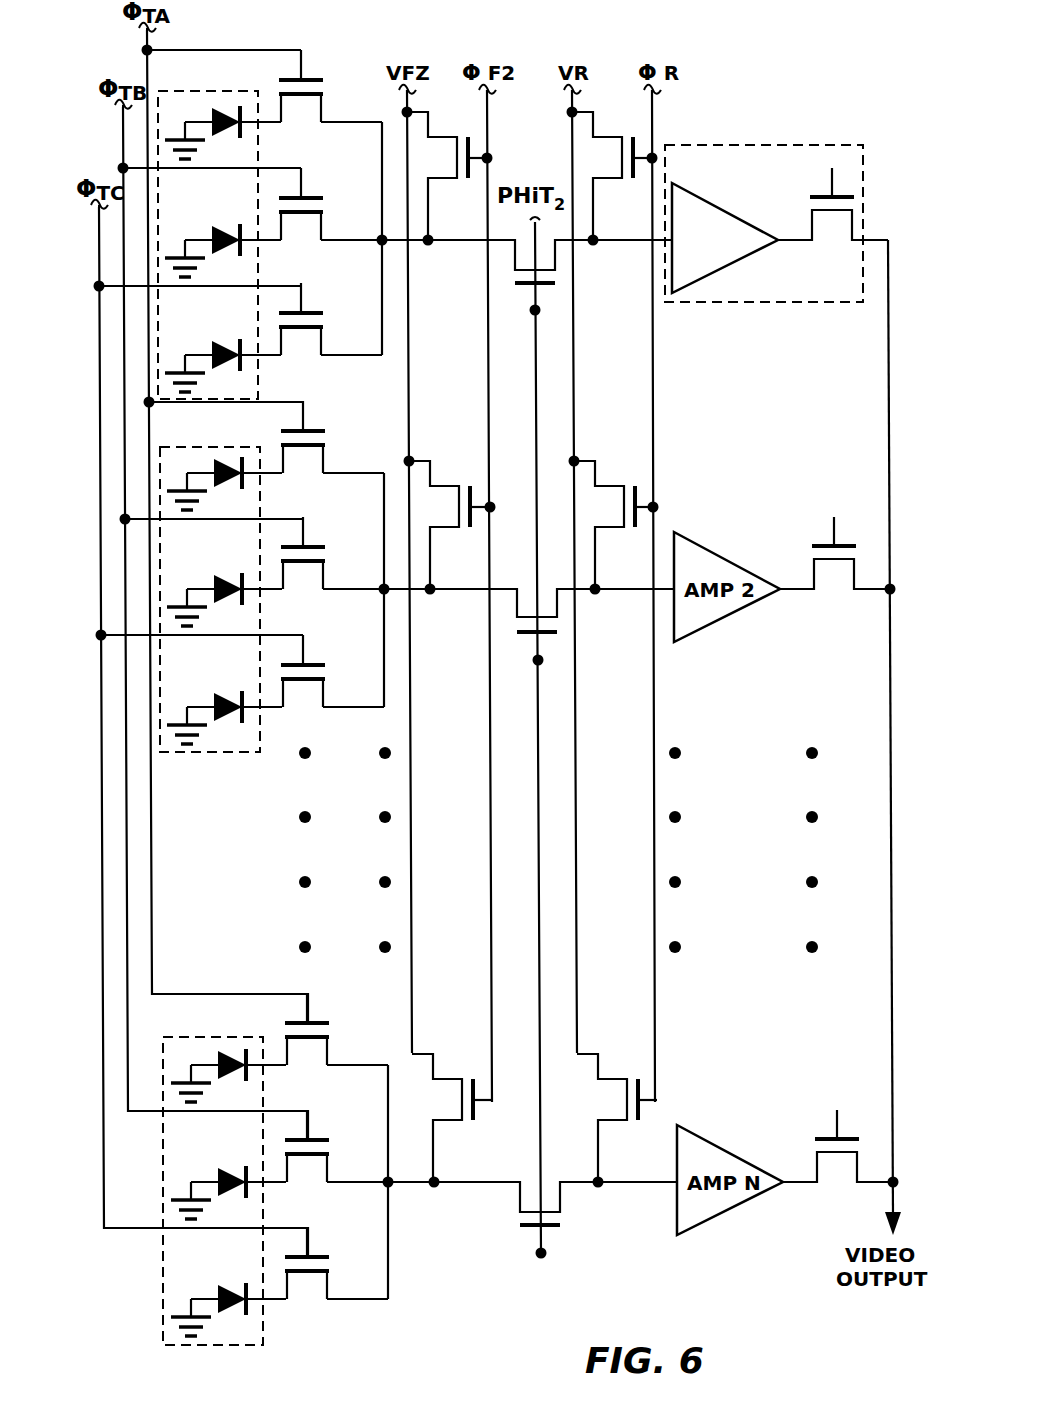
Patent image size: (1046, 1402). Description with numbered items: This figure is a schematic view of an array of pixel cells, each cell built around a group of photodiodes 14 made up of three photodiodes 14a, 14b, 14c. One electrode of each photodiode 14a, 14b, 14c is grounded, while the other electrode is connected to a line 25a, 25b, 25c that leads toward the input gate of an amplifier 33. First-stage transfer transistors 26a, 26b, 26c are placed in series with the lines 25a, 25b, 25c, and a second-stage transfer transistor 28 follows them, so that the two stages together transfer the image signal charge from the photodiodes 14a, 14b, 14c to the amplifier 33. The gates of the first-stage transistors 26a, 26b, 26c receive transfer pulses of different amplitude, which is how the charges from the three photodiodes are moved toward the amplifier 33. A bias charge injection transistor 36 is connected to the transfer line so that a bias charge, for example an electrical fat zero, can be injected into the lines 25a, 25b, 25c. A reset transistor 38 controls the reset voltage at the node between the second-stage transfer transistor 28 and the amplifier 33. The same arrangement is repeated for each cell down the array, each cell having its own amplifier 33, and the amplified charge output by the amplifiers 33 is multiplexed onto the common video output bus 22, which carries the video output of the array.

The photodiodes 14 is at (155, 350).
The photodiode 14a is at (200, 121).
The photodiode 14b is at (200, 239).
The photodiode 14c is at (200, 354).
The line 25a is at (262, 123).
The line 25b is at (267, 241).
The line 25c is at (263, 356).
The first-stage transfer transistor 26a is at (308, 127).
The first-stage transfer transistor 26b is at (308, 246).
The first-stage transfer transistor 26c is at (308, 355).
The second-stage transfer transistor 28 is at (520, 236).
The amplifier 33 is at (758, 140).
The bias charge injection transistor 36 is at (418, 151).
The reset transistor 38 is at (584, 160).
The common video output bus 22 is at (891, 276).